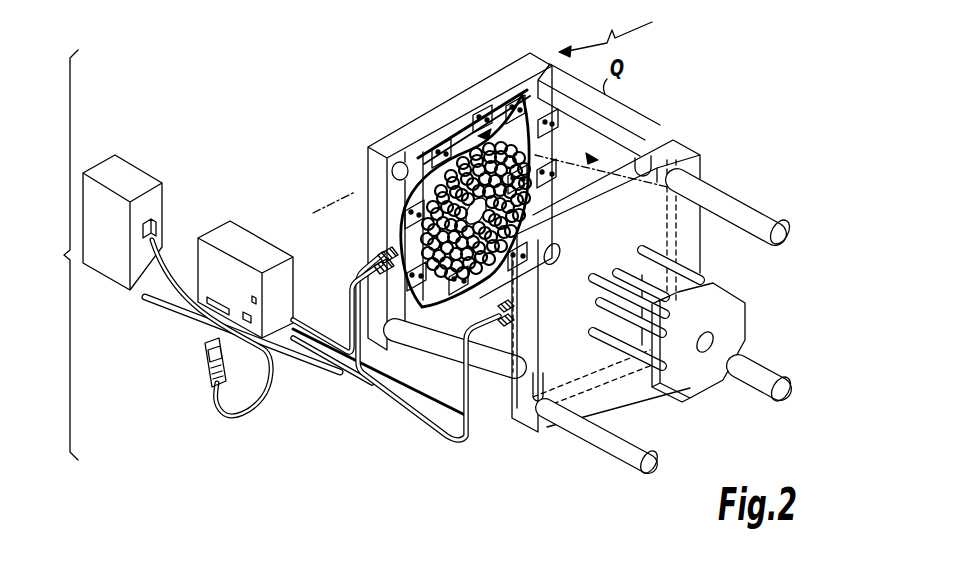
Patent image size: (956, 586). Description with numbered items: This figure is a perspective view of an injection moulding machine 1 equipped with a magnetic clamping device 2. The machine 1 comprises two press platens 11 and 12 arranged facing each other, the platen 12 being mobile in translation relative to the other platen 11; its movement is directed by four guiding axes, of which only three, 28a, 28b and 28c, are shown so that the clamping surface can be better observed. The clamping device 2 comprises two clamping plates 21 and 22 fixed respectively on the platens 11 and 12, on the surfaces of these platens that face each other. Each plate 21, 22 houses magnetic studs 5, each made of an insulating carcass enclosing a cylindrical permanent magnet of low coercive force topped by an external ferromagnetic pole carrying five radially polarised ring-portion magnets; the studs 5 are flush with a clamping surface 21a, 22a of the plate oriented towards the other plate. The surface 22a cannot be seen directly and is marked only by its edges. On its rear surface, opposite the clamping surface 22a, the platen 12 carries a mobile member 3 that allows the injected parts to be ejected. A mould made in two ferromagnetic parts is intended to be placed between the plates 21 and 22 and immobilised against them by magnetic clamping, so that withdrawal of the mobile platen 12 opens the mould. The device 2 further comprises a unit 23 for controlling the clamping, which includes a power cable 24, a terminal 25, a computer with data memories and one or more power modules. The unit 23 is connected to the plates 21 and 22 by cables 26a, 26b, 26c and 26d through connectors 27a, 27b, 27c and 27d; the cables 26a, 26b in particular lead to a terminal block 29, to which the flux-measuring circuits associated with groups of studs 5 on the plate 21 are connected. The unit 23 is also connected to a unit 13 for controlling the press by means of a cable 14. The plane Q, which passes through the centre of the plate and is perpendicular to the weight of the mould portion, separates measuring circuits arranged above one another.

The injection moulding machine 1 is at (66, 255).
The magnetic clamping device 2 is at (614, 28).
The mobile member 3 is at (732, 317).
The magnetic studs 5 is at (518, 115).
The press platen 11 is at (466, 104).
The press platen 12 is at (683, 150).
The unit for controlling the press 13 is at (118, 173).
The cable 14 is at (163, 279).
The clamping plate 21 is at (515, 88).
The clamping surface 21a is at (505, 112).
The clamping plate 22 is at (627, 160).
The clamping surface 22a is at (590, 140).
The unit for controlling the clamping 23 is at (240, 243).
The power cable 24 is at (170, 308).
The terminal 25 is at (205, 352).
The cable 26a is at (351, 292).
The cable 26b is at (362, 379).
The cable 26c is at (342, 384).
The cable 26d is at (430, 390).
The connector 27a is at (387, 248).
The connector 27b is at (374, 260).
The connector 27c is at (510, 305).
The connector 27d is at (512, 325).
The guiding axis 28a is at (606, 448).
The guiding axis 28b is at (768, 368).
The guiding axis 28c is at (762, 220).
The terminal block 29 is at (378, 252).